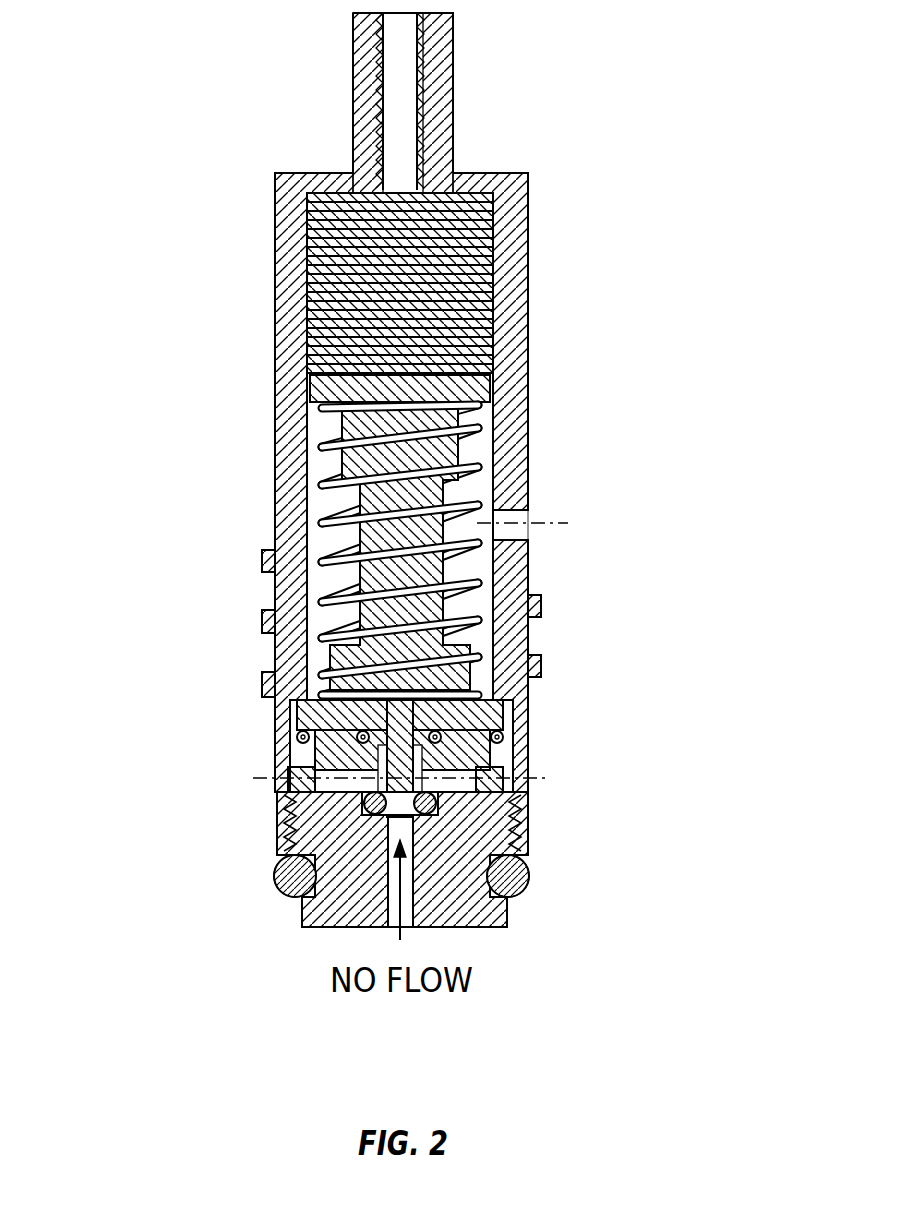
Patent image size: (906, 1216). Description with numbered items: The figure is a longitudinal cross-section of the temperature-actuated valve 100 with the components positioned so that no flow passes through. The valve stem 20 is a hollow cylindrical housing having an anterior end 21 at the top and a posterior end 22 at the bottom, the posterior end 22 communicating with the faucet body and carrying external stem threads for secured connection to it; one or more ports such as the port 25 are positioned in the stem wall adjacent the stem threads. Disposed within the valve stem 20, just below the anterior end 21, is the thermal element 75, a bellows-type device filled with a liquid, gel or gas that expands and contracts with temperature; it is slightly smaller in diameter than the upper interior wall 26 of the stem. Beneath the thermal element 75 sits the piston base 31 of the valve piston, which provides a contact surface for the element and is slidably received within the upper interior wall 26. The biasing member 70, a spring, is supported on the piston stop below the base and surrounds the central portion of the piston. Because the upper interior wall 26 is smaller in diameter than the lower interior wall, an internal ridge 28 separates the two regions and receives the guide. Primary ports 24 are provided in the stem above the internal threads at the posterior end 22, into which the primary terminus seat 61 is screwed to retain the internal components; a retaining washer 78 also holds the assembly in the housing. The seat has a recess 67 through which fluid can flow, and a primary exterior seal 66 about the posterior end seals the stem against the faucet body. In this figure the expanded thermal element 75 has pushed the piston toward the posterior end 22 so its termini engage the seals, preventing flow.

The temperature-actuated valve 100 is at (137, 251).
The valve stem 20 is at (528, 295).
The anterior end 21 is at (453, 100).
The thermal element 75 is at (305, 265).
The piston base 31 is at (492, 404).
The upper interior wall 26 is at (315, 465).
The biasing member 70 is at (480, 458).
The port 25 is at (528, 513).
The internal ridge 28 is at (297, 702).
The primary ports 24 is at (528, 762).
The posterior end 22 is at (277, 820).
The retaining washer 78 is at (513, 792).
The recess 67 is at (402, 930).
The primary exterior seal 66 is at (530, 887).
The primary terminus seat 61 is at (318, 927).